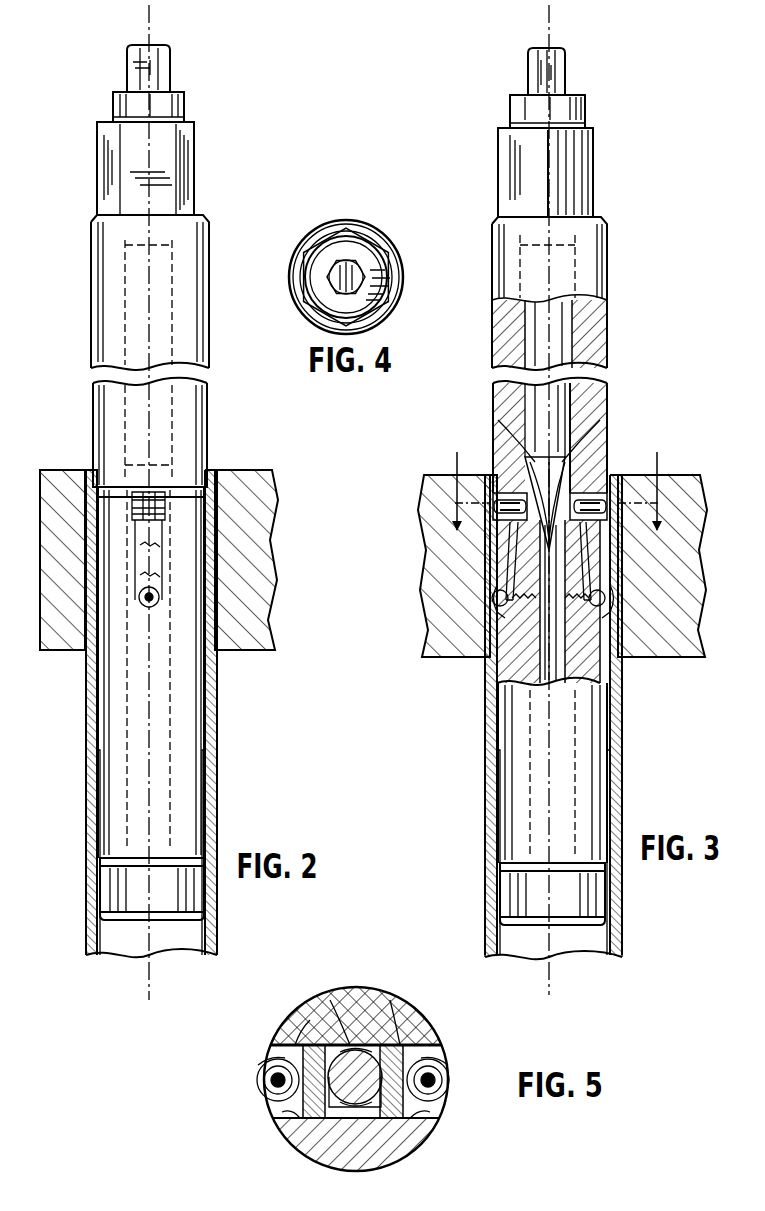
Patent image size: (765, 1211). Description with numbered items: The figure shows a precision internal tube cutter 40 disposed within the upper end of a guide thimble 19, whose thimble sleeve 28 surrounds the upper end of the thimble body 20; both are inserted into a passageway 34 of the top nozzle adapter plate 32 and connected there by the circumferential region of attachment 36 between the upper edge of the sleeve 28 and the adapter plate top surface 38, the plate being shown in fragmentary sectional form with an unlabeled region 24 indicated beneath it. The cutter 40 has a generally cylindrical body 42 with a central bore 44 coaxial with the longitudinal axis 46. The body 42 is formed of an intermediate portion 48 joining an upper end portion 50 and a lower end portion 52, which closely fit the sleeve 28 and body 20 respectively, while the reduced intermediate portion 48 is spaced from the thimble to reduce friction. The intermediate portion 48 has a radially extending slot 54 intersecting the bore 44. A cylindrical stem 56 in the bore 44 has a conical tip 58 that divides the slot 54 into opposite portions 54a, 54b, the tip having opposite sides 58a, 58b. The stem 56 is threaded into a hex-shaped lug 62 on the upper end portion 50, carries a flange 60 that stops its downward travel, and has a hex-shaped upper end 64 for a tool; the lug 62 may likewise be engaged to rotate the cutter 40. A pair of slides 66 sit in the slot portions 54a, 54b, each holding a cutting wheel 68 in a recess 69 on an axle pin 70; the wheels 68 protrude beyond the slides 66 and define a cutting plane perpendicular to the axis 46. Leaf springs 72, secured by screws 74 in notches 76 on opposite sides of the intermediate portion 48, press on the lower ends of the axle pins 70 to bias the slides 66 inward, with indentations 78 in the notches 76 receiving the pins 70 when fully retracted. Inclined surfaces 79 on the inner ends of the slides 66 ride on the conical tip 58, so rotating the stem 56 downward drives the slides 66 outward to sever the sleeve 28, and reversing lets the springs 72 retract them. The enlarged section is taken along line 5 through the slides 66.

In FIG. 3, the section line 5 is at (556, 477).
In FIG. 2, the guide thimble 19 is at (86, 950).
In FIG. 3, the guide thimble 19 is at (626, 948).
In FIG. 2, the thimble body 20 is at (100, 930).
In FIG. 3, the thimble body 20 is at (607, 947).
In FIG. 2, the mounting surface 24 is at (50, 654).
In FIG. 3, the mounting surface 24 is at (693, 660).
In FIG. 2, the thimble sleeve 28 is at (218, 735).
In FIG. 3, the thimble sleeve 28 is at (623, 725).
In FIG. 2, the top nozzle adapter plate 32 is at (40, 650).
In FIG. 3, the top nozzle adapter plate 32 is at (707, 632).
In FIG. 2, the passageway 34 is at (92, 660).
In FIG. 3, the passageway 34 is at (488, 660).
In FIG. 2, the circumferential region of attachment 36 is at (88, 470).
In FIG. 3, the circumferential region of attachment 36 is at (488, 470).
In FIG. 2, the adapter plate top surface 38 is at (52, 470).
In FIG. 3, the adapter plate top surface 38 is at (692, 475).
In FIG. 2, the precision internal tube cutter 40 is at (74, 126).
In FIG. 3, the precision internal tube cutter 40 is at (612, 107).
In FIG. 2, the cutter body 42 is at (212, 325).
In FIG. 3, the cutter body 42 is at (612, 352).
In FIG. 2, the central bore 44 is at (212, 392).
In FIG. 3, the central bore 44 is at (606, 386).
In FIG. 2, the longitudinal axis 46 is at (146, 30).
In FIG. 3, the longitudinal axis 46 is at (547, 30).
In FIG. 2, the intermediate portion 48 is at (210, 695).
In FIG. 3, the intermediate portion 48 is at (614, 795).
In FIG. 5, the intermediate portion 48 is at (416, 1000).
In FIG. 2, the upper end portion 50 is at (91, 328).
In FIG. 3, the upper end portion 50 is at (608, 240).
In FIG. 4, the upper end portion 50 is at (395, 312).
In FIG. 2, the lower end portion 52 is at (100, 875).
In FIG. 3, the lower end portion 52 is at (607, 890).
In FIG. 3, the radially extending slot 54 is at (493, 393).
In FIG. 5, the radially extending slot 54 is at (337, 1160).
In FIG. 5, the slot portion 54a is at (442, 1118).
In FIG. 5, the slot portion 54b is at (275, 1118).
In FIG. 2, the stem 56 is at (192, 430).
In FIG. 3, the stem 56 is at (575, 312).
In FIG. 5, the stem 56 is at (425, 1120).
In FIG. 3, the conical tip 58 is at (545, 570).
In FIG. 5, the conical tip 58 is at (388, 1165).
In FIG. 5, the side of conical tip 58a is at (362, 1005).
In FIG. 5, the side of conical tip 58b is at (312, 1160).
In FIG. 2, the flange 60 is at (184, 106).
In FIG. 3, the flange 60 is at (511, 108).
In FIG. 4, the flange 60 is at (336, 245).
In FIG. 2, the lug 62 is at (200, 147).
In FIG. 3, the lug 62 is at (596, 175).
In FIG. 4, the lug 62 is at (400, 278).
In FIG. 2, the hex-shaped upper end 64 is at (165, 70).
In FIG. 3, the hex-shaped upper end 64 is at (533, 72).
In FIG. 4, the hex-shaped upper end 64 is at (356, 246).
In FIG. 2, the slides 66 is at (166, 497).
In FIG. 3, the slides 66 is at (500, 440).
In FIG. 5, the slides 66 is at (268, 1047).
In FIG. 2, the cutting wheels 68 is at (150, 505).
In FIG. 3, the cutting wheels 68 is at (497, 500).
In FIG. 5, the cutting wheels 68 is at (257, 1080).
In FIG. 5, the recesses 69 is at (391, 1000).
In FIG. 3, the axle pins 70 is at (510, 512).
In FIG. 5, the axle pins 70 is at (265, 1088).
In FIG. 2, the leaf springs 72 is at (148, 562).
In FIG. 3, the leaf springs 72 is at (508, 558).
In FIG. 2, the screws 74 is at (140, 598).
In FIG. 3, the screws 74 is at (494, 600).
In FIG. 3, the notches 76 is at (497, 612).
In FIG. 3, the indentations 78 is at (500, 548).
In FIG. 3, the inclined surfaces 79 is at (595, 405).
In FIG. 5, the inclined surfaces 79 is at (330, 1000).